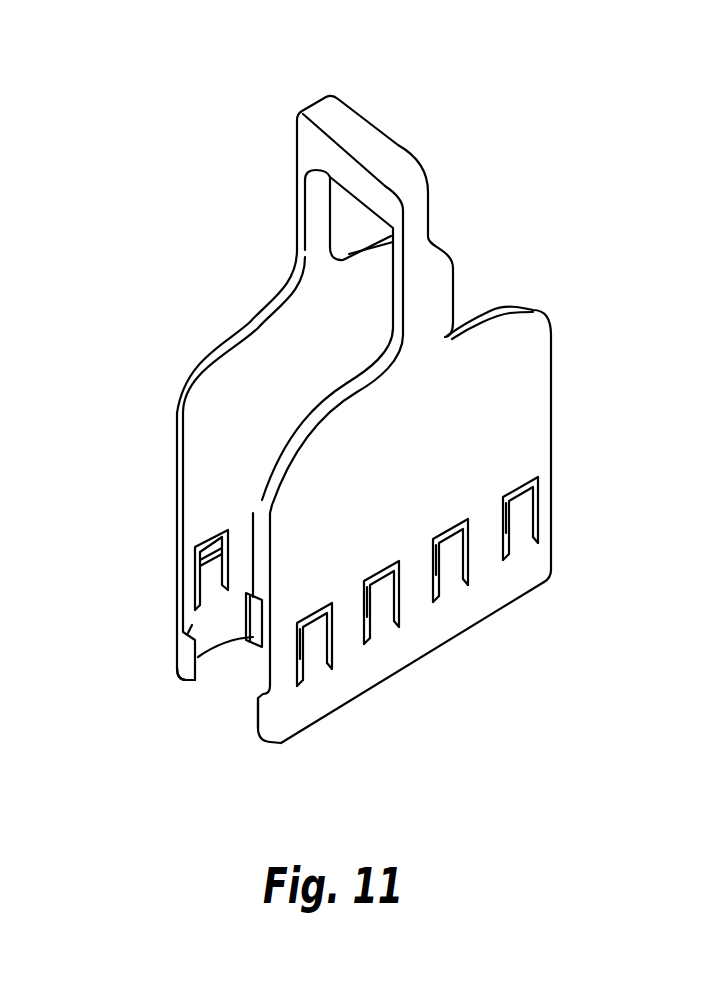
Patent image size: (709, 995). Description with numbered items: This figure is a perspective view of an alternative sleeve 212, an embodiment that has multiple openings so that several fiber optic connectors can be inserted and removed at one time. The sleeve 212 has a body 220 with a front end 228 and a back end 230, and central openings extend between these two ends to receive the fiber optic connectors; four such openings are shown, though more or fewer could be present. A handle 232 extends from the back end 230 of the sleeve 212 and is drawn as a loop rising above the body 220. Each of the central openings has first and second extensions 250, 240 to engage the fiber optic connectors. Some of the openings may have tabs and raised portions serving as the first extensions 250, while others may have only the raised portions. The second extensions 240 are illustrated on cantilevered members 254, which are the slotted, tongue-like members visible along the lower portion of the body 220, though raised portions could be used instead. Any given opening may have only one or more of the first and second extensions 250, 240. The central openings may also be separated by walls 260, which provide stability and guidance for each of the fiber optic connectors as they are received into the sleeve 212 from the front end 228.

The sleeve 212 is at (548, 171).
The handle 232 is at (390, 148).
The body 220 is at (533, 349).
The front end 228 is at (500, 613).
The back end 230 is at (177, 468).
The walls 260 is at (238, 513).
The second extensions 240 is at (256, 643).
The first extensions 250 is at (212, 572).
The cantilevered members 254 is at (314, 660).